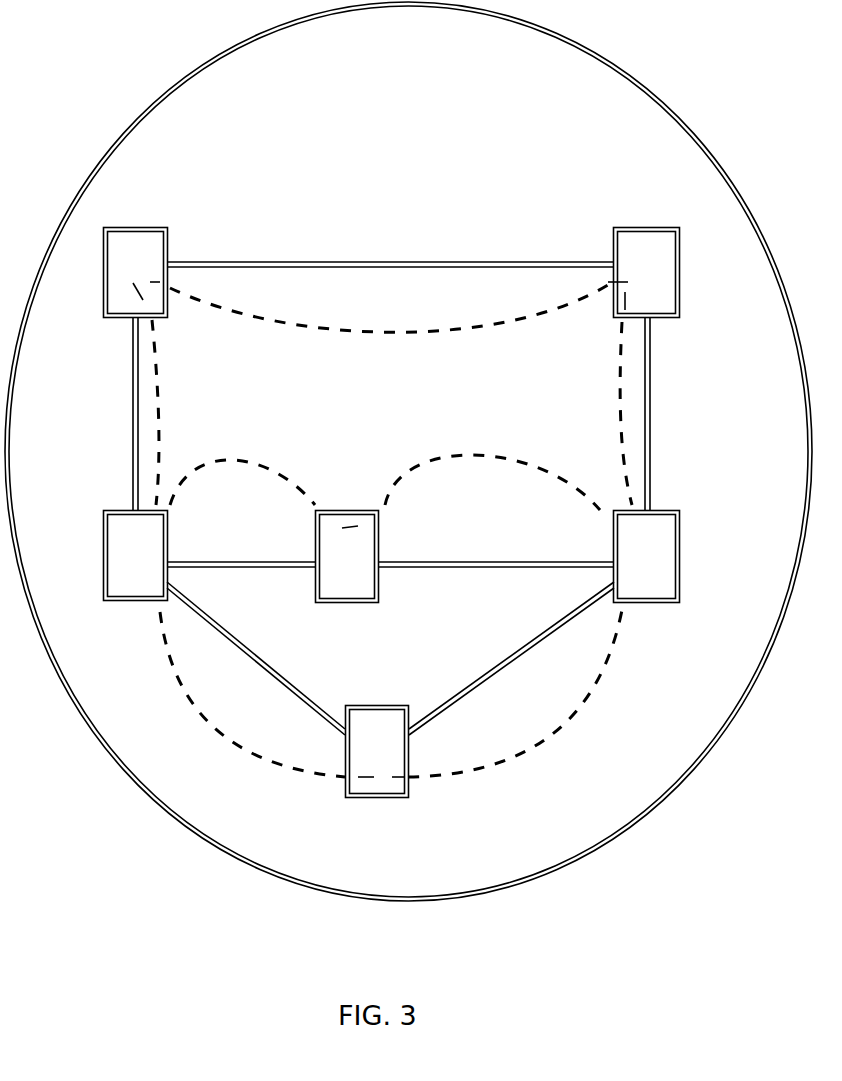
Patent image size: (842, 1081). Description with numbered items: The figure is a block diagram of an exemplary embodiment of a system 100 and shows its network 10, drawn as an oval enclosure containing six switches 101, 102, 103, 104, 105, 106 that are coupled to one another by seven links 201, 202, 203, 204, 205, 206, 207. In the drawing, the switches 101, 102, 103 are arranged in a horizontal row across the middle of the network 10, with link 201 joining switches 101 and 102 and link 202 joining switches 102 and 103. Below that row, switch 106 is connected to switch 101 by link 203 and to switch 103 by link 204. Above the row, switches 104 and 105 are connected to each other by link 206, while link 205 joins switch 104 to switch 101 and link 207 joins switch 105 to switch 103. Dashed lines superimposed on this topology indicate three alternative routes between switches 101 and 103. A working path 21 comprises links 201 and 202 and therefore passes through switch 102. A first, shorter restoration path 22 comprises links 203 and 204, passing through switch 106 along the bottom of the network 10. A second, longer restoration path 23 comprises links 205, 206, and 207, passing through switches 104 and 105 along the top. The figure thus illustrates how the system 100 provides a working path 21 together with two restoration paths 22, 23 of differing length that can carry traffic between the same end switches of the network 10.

The system 100 is at (167, 58).
The network 10 is at (408, 451).
The switch 101 is at (136, 581).
The switch 102 is at (347, 535).
The switch 103 is at (664, 581).
The switch 104 is at (137, 246).
The switch 105 is at (644, 246).
The switch 106 is at (377, 778).
The link 201 is at (241, 549).
The link 202 is at (496, 541).
The link 203 is at (256, 658).
The link 204 is at (511, 658).
The link 205 is at (97, 414).
The link 206 is at (390, 235).
The link 207 is at (684, 414).
The working path 21 is at (473, 452).
The first restoration path 22 is at (513, 781).
The second restoration path 23 is at (290, 322).